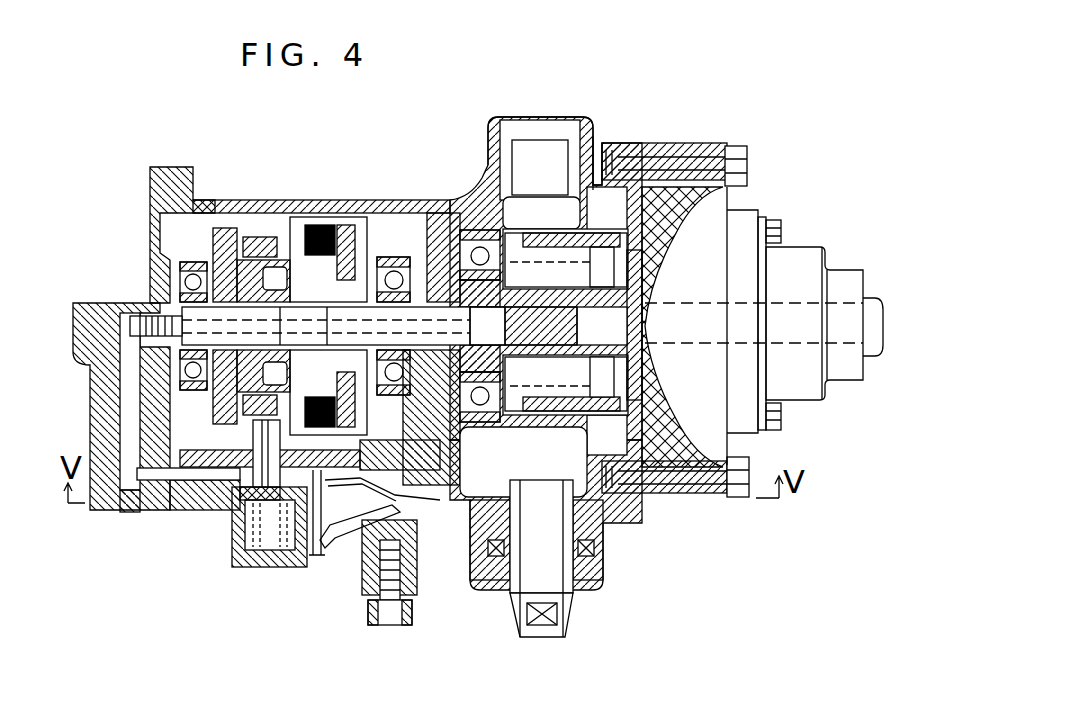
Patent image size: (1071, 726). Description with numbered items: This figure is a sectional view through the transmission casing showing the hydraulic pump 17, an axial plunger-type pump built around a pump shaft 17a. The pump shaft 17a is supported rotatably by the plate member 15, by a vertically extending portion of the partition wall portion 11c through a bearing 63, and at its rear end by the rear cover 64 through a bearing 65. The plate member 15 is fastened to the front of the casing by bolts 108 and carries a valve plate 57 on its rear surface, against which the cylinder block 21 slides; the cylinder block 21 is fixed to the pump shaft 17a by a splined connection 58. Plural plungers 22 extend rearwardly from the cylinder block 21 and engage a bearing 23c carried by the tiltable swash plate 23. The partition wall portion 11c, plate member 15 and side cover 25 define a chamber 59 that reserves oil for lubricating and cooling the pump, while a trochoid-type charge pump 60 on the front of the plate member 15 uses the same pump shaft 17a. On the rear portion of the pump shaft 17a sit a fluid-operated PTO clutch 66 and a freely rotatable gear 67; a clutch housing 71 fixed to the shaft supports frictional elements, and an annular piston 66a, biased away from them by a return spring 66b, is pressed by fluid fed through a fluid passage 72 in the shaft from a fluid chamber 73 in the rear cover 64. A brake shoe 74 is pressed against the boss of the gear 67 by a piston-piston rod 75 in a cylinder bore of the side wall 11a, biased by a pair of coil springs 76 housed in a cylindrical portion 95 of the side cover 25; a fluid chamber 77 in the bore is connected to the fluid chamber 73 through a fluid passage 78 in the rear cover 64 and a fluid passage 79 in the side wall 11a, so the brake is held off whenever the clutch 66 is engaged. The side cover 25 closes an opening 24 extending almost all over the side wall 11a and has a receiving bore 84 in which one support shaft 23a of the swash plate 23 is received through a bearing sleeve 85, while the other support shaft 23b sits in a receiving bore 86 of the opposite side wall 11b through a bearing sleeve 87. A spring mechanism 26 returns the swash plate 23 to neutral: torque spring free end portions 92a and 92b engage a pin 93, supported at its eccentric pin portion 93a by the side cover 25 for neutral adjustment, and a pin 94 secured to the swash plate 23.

The side wall 11a is at (613, 525).
The side wall of the opposite side 11b is at (443, 197).
The partition wall portion 11c is at (490, 224).
The plate member 15 is at (697, 230).
The hydraulic pump 17 is at (740, 432).
The pump shaft 17a is at (648, 318).
The cylinder block 21 is at (595, 242).
The plungers 22 is at (510, 313).
The swash plate 23 is at (458, 443).
The support shaft 23a is at (530, 567).
The support shaft 23b is at (540, 185).
The bearing 23c is at (512, 410).
The opening 24 is at (316, 550).
The side cover 25 is at (337, 550).
The spring mechanism 26 is at (371, 479).
The valve plate 57 is at (682, 168).
The splined connection 58 is at (653, 388).
The chamber 59 is at (623, 418).
The charge pump 60 is at (793, 265).
The bearing 63 is at (388, 255).
The rear cover 64 is at (140, 502).
The bearing 65 is at (203, 263).
The PTO clutch 66 is at (320, 230).
The annular piston 66a is at (505, 382).
The return spring 66b is at (298, 225).
The gear 67 is at (226, 237).
The clutch housing 71 is at (350, 230).
The fluid passage 72 is at (415, 308).
The fluid chamber 73 is at (140, 318).
The brake shoe 74 is at (211, 418).
The piston-piston rod 75 is at (222, 512).
The coil springs 76 is at (250, 566).
The fluid chamber 77 is at (385, 500).
The fluid passage 78 is at (97, 467).
The fluid passage 79 is at (215, 495).
The receiving bore 84 is at (568, 550).
The bearing sleeve 85 is at (482, 560).
The receiving bore 86 is at (517, 122).
The bearing sleeve 87 is at (593, 150).
The free end portion 92a is at (373, 445).
The free end portion 92b is at (352, 595).
The pin 93 is at (400, 605).
The eccentric pin portion 93a is at (385, 628).
The pin 94 is at (503, 494).
The cylindrical portion 95 is at (272, 550).
The bolts 108 is at (742, 166).